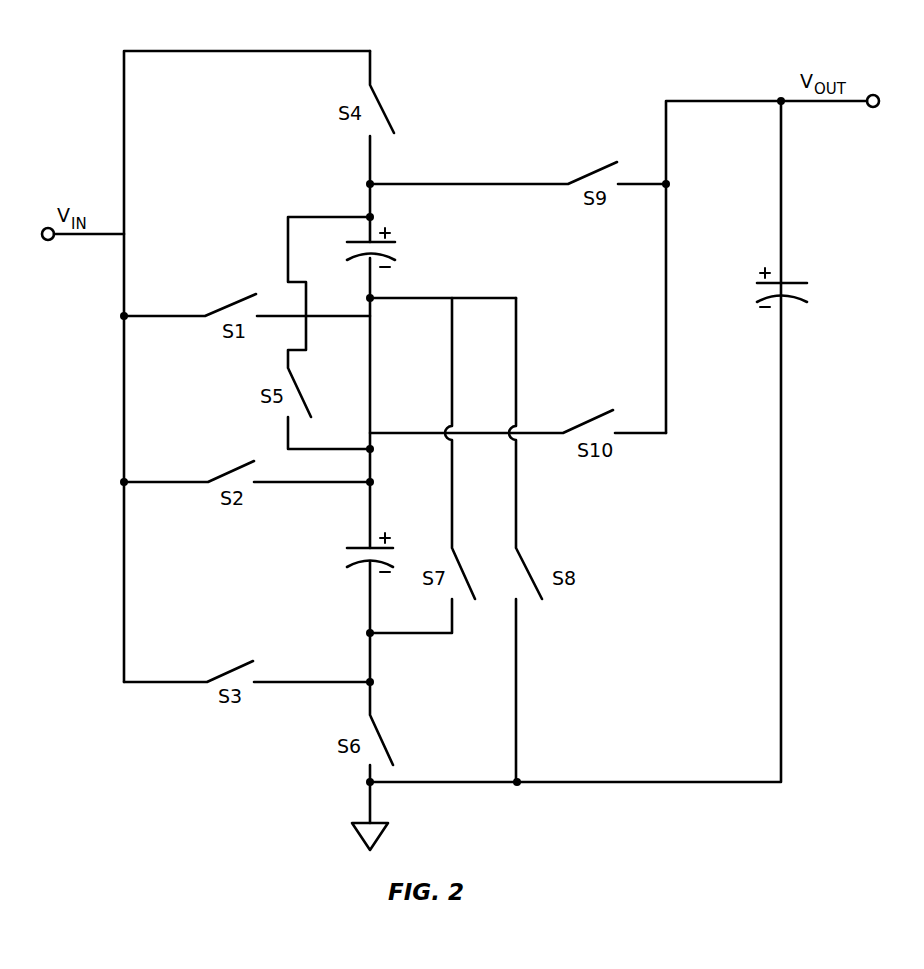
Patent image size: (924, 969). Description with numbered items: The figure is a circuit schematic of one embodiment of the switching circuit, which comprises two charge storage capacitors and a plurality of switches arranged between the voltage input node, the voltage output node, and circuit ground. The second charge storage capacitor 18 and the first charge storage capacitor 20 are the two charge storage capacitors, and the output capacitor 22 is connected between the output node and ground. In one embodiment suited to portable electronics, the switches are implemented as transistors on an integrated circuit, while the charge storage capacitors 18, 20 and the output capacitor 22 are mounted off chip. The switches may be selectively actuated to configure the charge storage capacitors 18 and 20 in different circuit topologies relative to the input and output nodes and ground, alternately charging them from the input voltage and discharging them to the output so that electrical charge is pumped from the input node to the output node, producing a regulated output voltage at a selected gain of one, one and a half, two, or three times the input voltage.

The capacitor C2 18 is at (394, 242).
The capacitor C1 20 is at (363, 547).
The output capacitor 22 is at (798, 282).